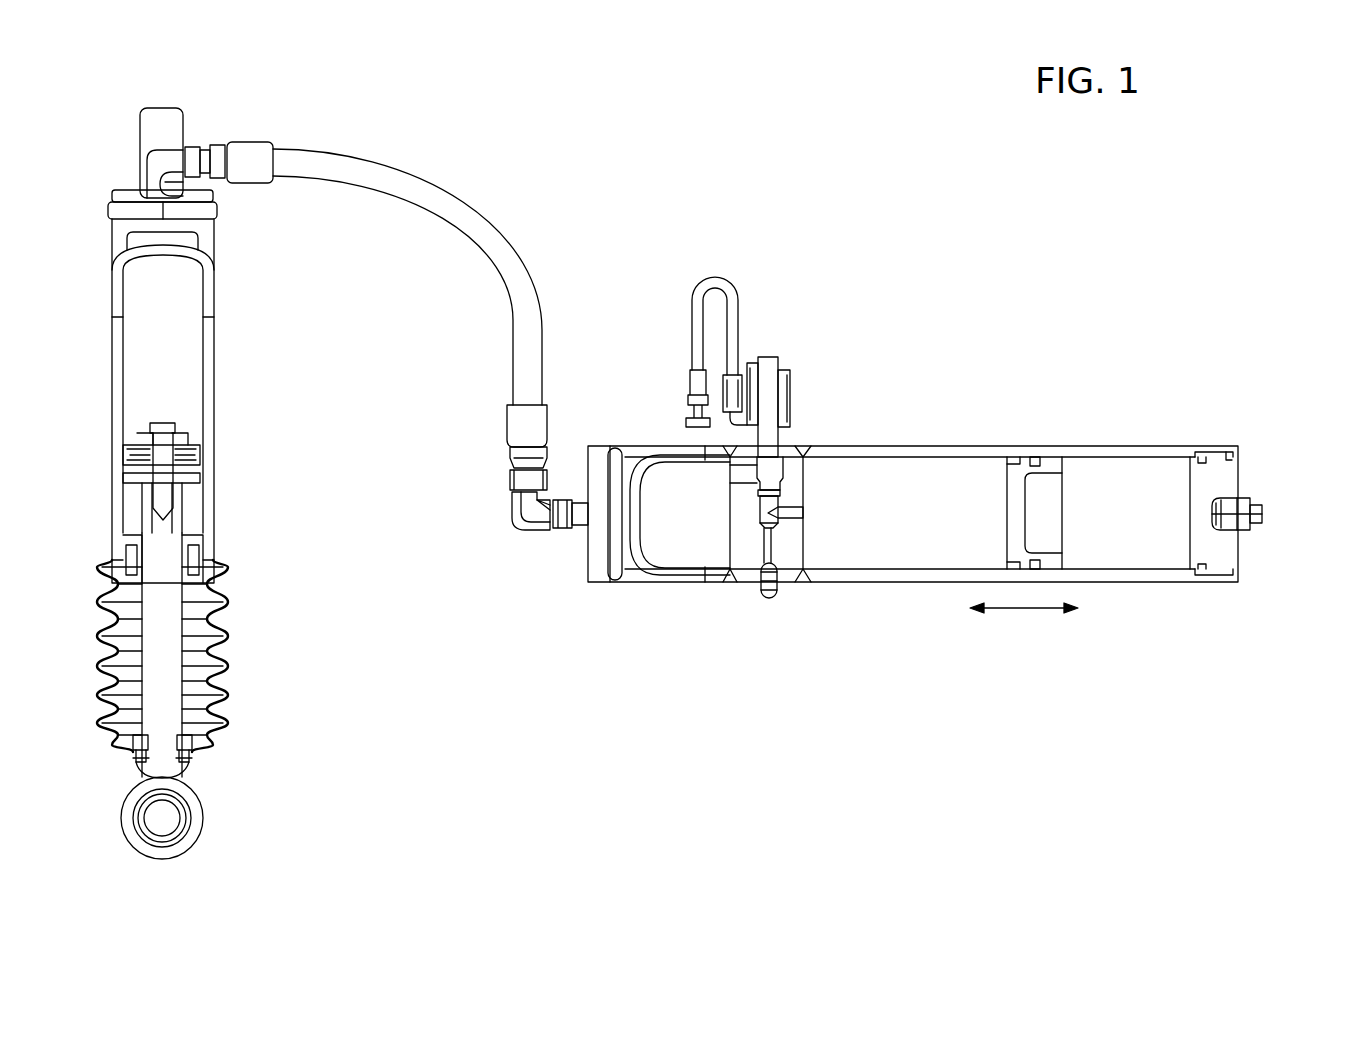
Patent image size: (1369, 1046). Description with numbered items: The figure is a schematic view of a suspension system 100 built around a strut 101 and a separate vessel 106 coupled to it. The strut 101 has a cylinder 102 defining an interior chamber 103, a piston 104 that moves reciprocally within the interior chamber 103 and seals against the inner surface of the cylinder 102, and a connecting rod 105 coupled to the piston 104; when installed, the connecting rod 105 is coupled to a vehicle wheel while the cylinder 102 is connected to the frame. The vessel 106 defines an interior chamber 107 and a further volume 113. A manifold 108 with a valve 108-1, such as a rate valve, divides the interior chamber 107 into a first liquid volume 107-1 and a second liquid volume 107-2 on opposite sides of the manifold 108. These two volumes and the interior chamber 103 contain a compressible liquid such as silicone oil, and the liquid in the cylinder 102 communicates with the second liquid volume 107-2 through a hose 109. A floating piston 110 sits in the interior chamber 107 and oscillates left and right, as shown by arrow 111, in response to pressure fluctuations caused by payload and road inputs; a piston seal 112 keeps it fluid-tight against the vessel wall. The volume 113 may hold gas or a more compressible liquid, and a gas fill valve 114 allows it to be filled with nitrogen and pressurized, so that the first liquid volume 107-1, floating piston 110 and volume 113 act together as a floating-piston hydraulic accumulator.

The suspension system 100 is at (668, 148).
The strut 101 is at (252, 436).
The cylinder 102 is at (215, 342).
The interior chamber 103 is at (168, 388).
The piston 104 is at (180, 463).
The connecting rod 105 is at (163, 650).
The vessel 106 is at (937, 452).
The interior chamber 107 is at (890, 548).
The first liquid volume 107-1 is at (835, 540).
The second liquid volume 107-2 is at (692, 545).
The manifold 108 is at (787, 452).
The valve 108-1 is at (790, 497).
The hose 109 is at (428, 200).
The floating piston 110 is at (1038, 497).
The arrow 111 is at (1023, 612).
The piston seal 112 is at (1033, 570).
The volume 113 is at (1120, 480).
The gas fill valve 114 is at (1238, 496).